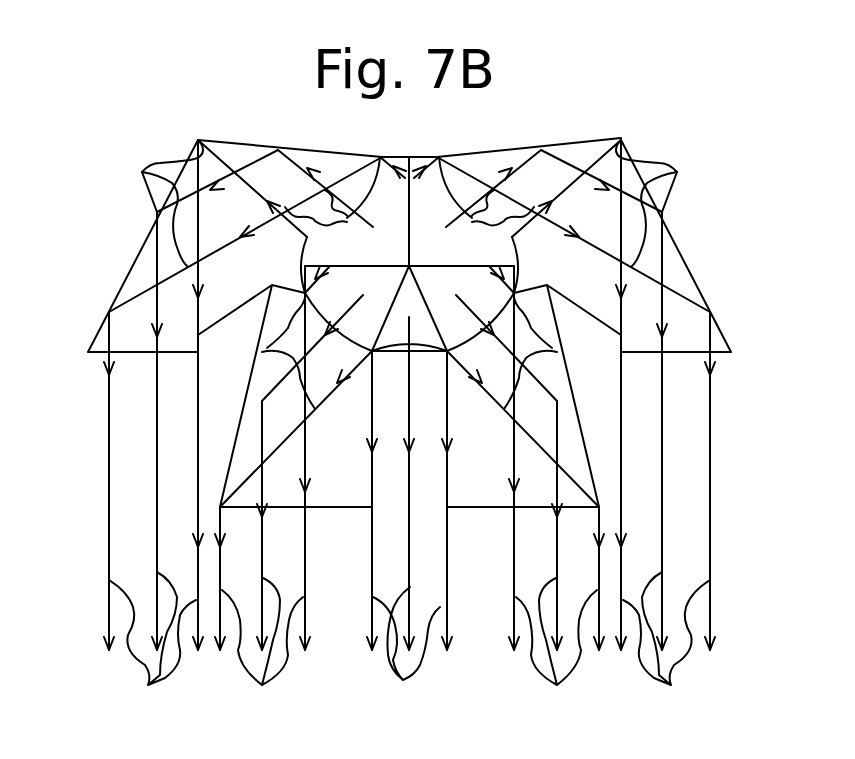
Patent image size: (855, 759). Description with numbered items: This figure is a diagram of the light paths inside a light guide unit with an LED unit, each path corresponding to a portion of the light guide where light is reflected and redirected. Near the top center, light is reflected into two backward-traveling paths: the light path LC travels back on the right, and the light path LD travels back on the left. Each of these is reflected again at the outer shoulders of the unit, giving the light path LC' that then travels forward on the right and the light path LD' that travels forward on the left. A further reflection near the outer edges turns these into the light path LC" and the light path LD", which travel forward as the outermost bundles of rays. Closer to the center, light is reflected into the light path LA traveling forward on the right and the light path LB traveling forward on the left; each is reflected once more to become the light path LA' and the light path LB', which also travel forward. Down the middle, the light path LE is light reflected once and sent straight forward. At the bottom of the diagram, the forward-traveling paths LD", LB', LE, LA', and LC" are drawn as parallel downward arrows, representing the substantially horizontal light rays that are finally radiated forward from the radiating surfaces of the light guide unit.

The light path LD' is at (137, 204).
The light path LD is at (341, 214).
The light path LC is at (485, 214).
The light path LC' is at (682, 204).
The light path LB is at (260, 351).
The light path LA is at (561, 351).
The light path LD'' is at (157, 653).
The light path LB' is at (262, 656).
The light path LE is at (406, 661).
The light path LA' is at (559, 656).
The light path LC'' is at (670, 653).